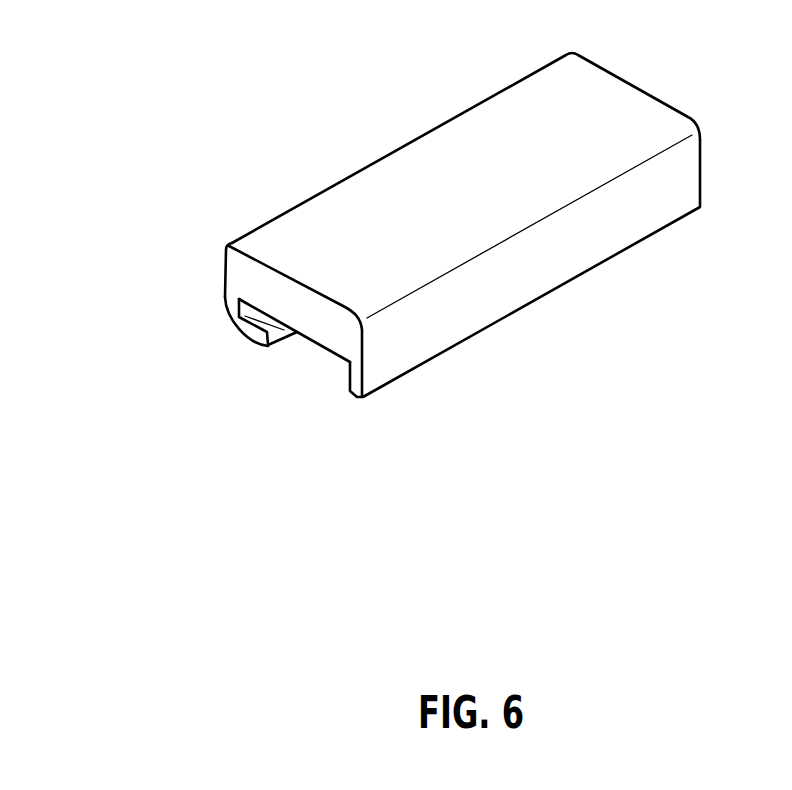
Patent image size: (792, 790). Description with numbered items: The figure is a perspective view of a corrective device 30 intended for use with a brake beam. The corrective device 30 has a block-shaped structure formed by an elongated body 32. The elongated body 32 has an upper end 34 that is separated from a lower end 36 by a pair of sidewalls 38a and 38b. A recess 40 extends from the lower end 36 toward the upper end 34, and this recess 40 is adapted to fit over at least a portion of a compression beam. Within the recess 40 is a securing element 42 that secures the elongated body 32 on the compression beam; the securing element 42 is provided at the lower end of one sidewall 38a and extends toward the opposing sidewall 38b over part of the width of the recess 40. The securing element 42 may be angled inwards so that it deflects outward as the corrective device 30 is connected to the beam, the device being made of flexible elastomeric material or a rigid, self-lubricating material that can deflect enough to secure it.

The corrective device 30 is at (357, 103).
The elongated body 32 is at (248, 282).
The upper end 34 is at (611, 93).
The lower end 36 is at (354, 397).
The sidewall 38a is at (223, 272).
The sidewall 38b is at (685, 187).
The recess 40 is at (302, 365).
The securing element 42 is at (252, 333).